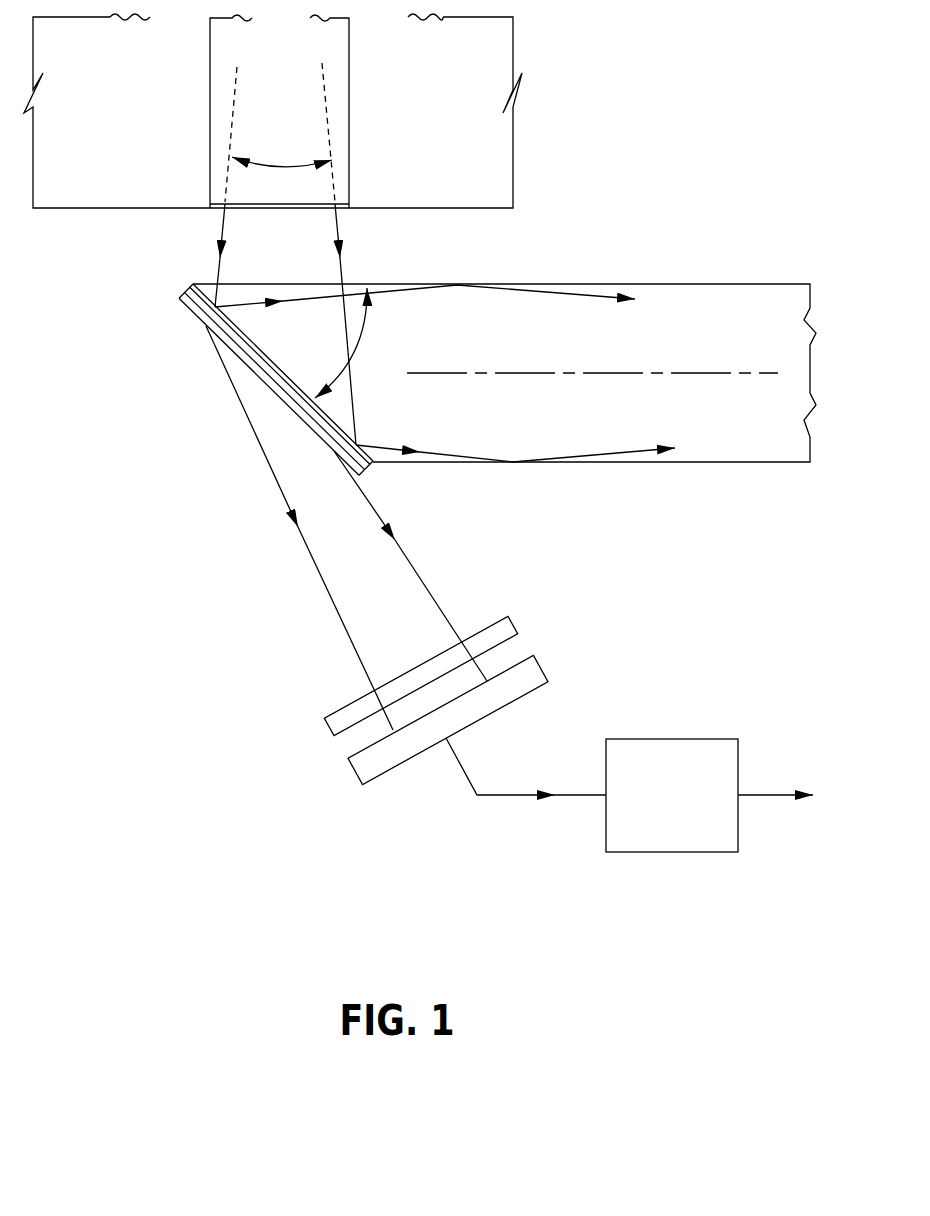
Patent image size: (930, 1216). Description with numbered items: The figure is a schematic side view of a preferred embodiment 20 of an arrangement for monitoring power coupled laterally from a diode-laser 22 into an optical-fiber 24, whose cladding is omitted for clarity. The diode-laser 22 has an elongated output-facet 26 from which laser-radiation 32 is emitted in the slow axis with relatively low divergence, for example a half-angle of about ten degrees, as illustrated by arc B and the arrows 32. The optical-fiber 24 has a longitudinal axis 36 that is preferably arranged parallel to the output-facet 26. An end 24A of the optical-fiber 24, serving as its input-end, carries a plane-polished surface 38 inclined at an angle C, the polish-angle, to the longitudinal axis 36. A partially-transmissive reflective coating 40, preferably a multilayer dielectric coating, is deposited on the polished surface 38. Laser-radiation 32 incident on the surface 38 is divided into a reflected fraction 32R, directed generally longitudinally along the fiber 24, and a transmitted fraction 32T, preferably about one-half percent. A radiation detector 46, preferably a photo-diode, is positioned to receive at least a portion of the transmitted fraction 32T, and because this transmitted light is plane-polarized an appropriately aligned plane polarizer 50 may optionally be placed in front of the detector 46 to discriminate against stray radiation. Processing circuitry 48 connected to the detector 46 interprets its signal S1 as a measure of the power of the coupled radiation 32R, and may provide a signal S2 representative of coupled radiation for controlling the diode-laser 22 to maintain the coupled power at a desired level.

The power monitoring arrangement 20 is at (106, 650).
The diode-laser 22 is at (516, 148).
The output-facet 26 is at (250, 203).
The arc B is at (275, 165).
The laser-radiation 32 is at (220, 230).
The optical-fiber 24 is at (695, 278).
The end of optical-fiber 24A is at (191, 321).
The longitudinal axis 36 is at (705, 375).
The polished surface 38 is at (284, 372).
The reflective coating 40 is at (325, 448).
The angle C is at (362, 327).
The reflected fraction 32R is at (547, 294).
The transmitted fraction 32T is at (433, 594).
The plane polarizer 50 is at (328, 723).
The radiation detector 46 is at (539, 666).
The signal S1 is at (459, 762).
The processing circuitry 48 is at (703, 738).
The signal S2 is at (768, 793).